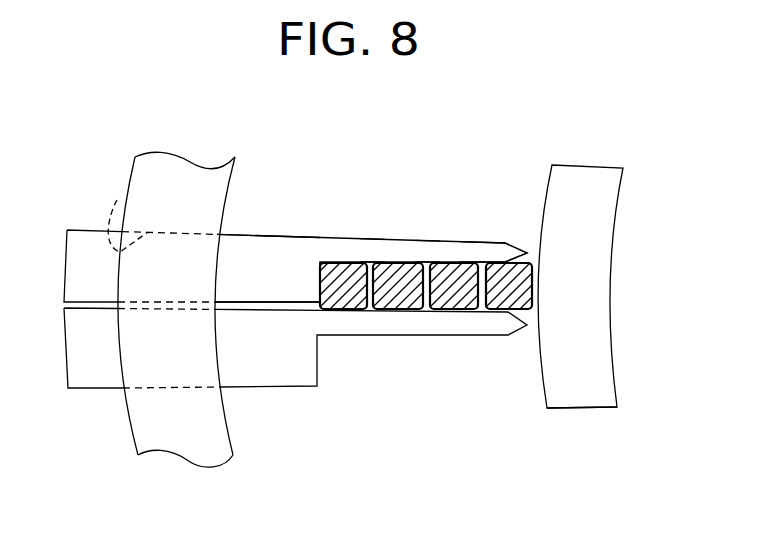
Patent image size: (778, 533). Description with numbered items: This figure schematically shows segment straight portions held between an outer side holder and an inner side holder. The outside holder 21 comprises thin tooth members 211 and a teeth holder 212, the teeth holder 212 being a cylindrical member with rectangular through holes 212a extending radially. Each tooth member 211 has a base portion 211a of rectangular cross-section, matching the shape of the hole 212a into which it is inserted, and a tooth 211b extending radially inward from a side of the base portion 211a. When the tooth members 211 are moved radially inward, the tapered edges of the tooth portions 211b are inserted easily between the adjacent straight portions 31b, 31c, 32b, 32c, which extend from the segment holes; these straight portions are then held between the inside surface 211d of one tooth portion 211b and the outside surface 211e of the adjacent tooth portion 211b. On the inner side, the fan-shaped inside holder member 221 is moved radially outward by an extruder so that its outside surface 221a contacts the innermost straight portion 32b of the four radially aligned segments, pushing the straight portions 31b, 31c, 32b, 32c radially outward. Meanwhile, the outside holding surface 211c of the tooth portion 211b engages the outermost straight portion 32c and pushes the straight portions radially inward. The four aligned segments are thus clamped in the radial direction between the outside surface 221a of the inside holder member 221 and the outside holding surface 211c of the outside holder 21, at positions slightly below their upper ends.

The outside holder 21 is at (135, 147).
The tooth member 211 is at (343, 233).
The base portion 211a is at (247, 260).
The tooth 211b is at (373, 250).
The outside holding surface 211c is at (320, 290).
The inside surface 211d is at (430, 262).
The outside surface 211e is at (472, 240).
The teeth holder 212 is at (200, 175).
The through hole 212a is at (117, 200).
The inside holder member 221 is at (585, 227).
The outside surface 221a is at (543, 395).
The straight portion 31b is at (447, 313).
The straight portion 31c is at (393, 313).
The innermost straight portion 32b is at (493, 315).
The outermost straight portion 32c is at (338, 318).